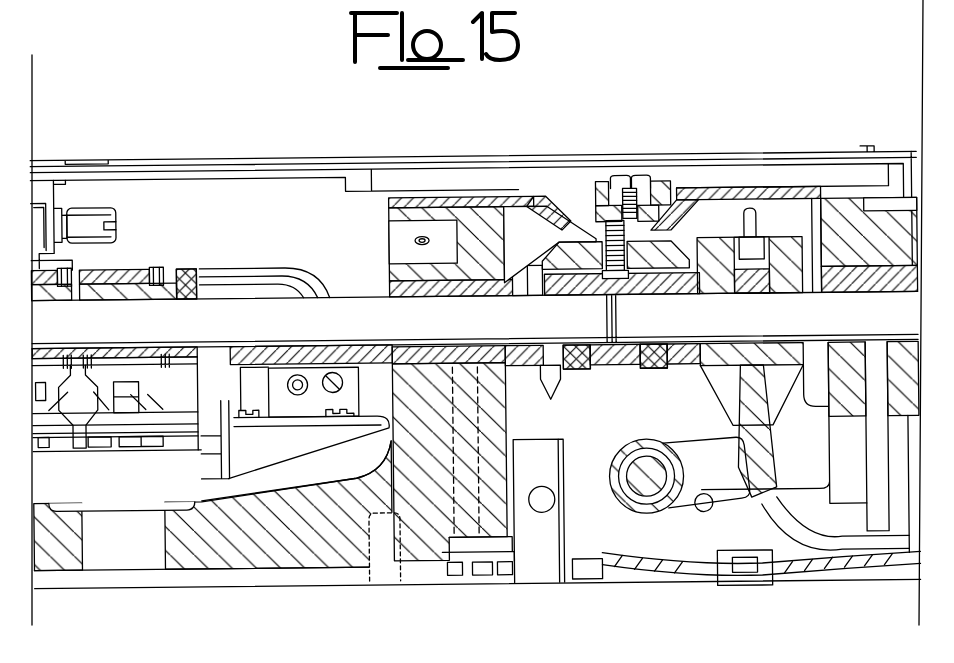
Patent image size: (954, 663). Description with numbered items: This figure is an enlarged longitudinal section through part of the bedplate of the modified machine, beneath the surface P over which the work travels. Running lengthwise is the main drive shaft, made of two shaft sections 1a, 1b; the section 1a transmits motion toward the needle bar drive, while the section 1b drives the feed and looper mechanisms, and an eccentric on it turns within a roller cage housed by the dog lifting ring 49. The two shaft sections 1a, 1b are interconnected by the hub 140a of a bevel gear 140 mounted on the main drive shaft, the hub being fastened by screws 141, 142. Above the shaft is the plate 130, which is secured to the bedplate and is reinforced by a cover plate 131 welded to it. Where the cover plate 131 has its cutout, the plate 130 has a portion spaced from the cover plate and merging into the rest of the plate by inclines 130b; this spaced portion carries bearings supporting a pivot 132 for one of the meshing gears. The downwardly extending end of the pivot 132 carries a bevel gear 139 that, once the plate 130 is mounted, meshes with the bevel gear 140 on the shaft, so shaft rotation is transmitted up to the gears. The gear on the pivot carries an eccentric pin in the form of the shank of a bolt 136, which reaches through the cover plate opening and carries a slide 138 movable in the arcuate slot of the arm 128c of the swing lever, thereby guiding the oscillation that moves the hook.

The surface P is at (240, 158).
The cover plate 131 is at (522, 195).
The arm of the swing lever 128c is at (610, 195).
The bolt 136 is at (643, 177).
The slide 138 is at (672, 195).
The inclines 130b is at (715, 202).
The plate 130 is at (770, 190).
The shaft section 1b is at (878, 308).
The pivot 132 is at (592, 262).
The bevel gear 139 is at (655, 258).
The shaft section 1a is at (410, 346).
The bevel gear 140 is at (548, 374).
The screw 141 is at (596, 366).
The hub 140a is at (625, 364).
The screw 142 is at (665, 364).
The dog lifting ring 49 is at (55, 443).